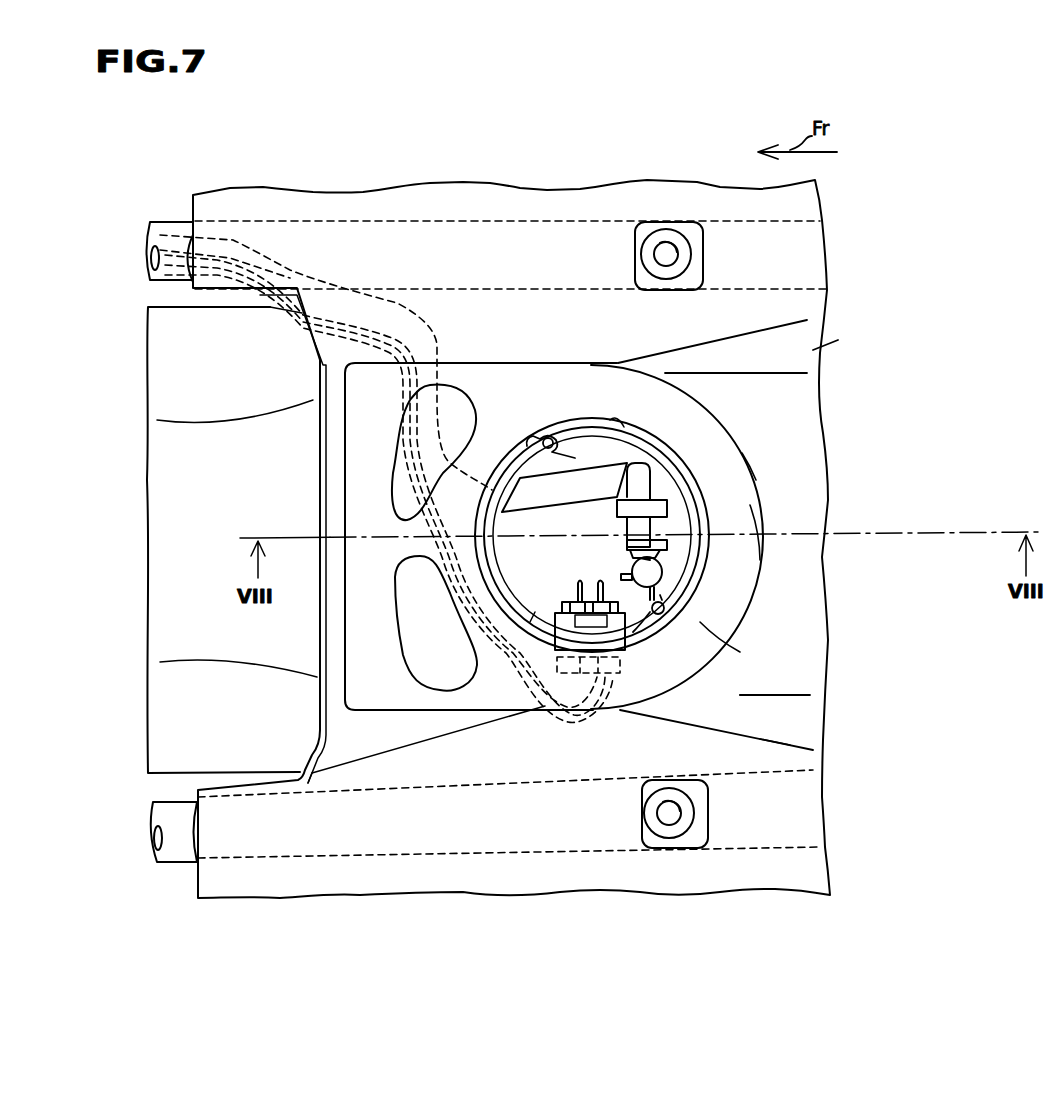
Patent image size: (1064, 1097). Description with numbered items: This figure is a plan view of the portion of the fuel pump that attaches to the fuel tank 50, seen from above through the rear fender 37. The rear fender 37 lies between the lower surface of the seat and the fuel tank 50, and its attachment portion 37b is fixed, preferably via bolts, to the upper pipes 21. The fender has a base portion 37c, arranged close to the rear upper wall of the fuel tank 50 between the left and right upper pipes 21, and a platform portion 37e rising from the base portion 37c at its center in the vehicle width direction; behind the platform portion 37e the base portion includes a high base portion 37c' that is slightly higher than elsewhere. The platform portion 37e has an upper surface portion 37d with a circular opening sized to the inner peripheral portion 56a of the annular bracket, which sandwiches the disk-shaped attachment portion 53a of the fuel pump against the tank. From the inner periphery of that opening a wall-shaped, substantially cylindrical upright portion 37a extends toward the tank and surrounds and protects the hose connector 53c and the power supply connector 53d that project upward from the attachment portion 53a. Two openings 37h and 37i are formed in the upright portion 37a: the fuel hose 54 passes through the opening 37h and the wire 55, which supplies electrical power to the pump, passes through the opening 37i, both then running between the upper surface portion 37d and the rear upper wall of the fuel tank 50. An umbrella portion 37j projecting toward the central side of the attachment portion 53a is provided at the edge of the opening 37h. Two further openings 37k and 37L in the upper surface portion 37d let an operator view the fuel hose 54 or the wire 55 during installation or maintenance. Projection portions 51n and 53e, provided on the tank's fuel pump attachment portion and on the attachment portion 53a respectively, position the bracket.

The upper pipes 21 is at (380, 218).
The fuel tank 50 is at (225, 302).
The fuel hose 54 is at (285, 258).
The rear fender 37 is at (541, 190).
The upright portion 37a is at (615, 415).
The attachment portion 37b is at (672, 216).
The base portion 37c is at (862, 762).
The high base portion 37c' is at (856, 705).
The upper surface portion 37d is at (717, 517).
The platform portion 37e is at (765, 483).
The opening 37h is at (505, 635).
The opening 37i is at (700, 620).
The umbrella portion 37j is at (535, 615).
The opening 37k is at (433, 658).
The opening 37L is at (450, 400).
The attachment portion 53a is at (633, 457).
The hose connector 53c is at (497, 534).
The power supply connector 53d is at (665, 578).
The projection portion 53e is at (550, 437).
The inner peripheral portion 56a is at (620, 458).
The wire 55 is at (560, 655).
The projection portion 51n is at (608, 673).